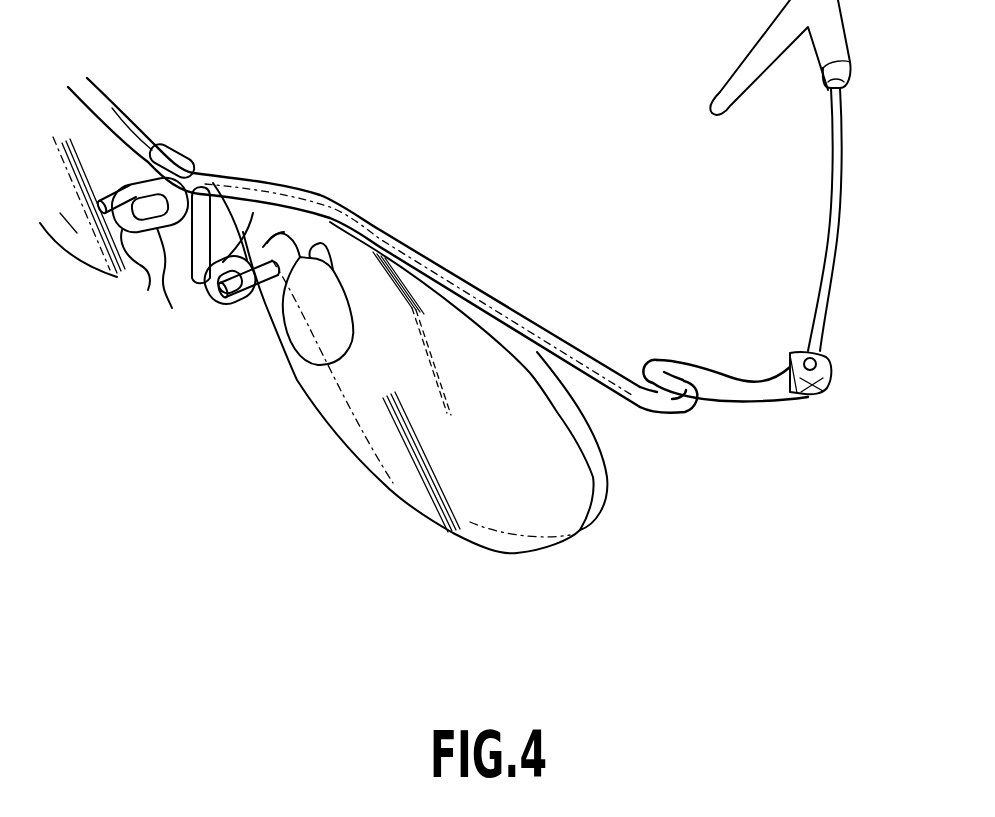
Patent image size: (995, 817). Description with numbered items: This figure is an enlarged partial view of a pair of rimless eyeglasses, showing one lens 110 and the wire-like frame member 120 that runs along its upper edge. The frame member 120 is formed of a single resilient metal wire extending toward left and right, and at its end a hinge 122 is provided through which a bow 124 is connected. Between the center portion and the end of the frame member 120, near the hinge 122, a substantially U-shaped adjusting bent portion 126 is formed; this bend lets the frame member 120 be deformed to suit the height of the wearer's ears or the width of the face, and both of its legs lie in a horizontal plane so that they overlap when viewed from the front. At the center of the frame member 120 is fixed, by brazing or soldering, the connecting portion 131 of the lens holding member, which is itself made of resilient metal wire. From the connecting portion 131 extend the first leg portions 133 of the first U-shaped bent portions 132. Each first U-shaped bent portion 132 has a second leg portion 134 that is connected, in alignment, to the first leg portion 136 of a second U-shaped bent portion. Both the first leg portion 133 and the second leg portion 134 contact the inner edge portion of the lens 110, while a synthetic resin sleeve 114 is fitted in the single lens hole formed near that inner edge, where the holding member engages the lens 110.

The lens 110 is at (415, 458).
The sleeve 114 is at (239, 309).
The frame member 120 is at (324, 209).
The hinge 122 is at (830, 383).
The bow 124 is at (831, 224).
The adjusting bent portion 126 is at (681, 361).
The connecting portion 131 is at (192, 161).
The first U-shaped bent portion 132 is at (110, 239).
The first leg portion 133 is at (144, 186).
The second leg portion 134 is at (142, 236).
The first leg portion of second U-shaped bent portion 136 is at (162, 230).